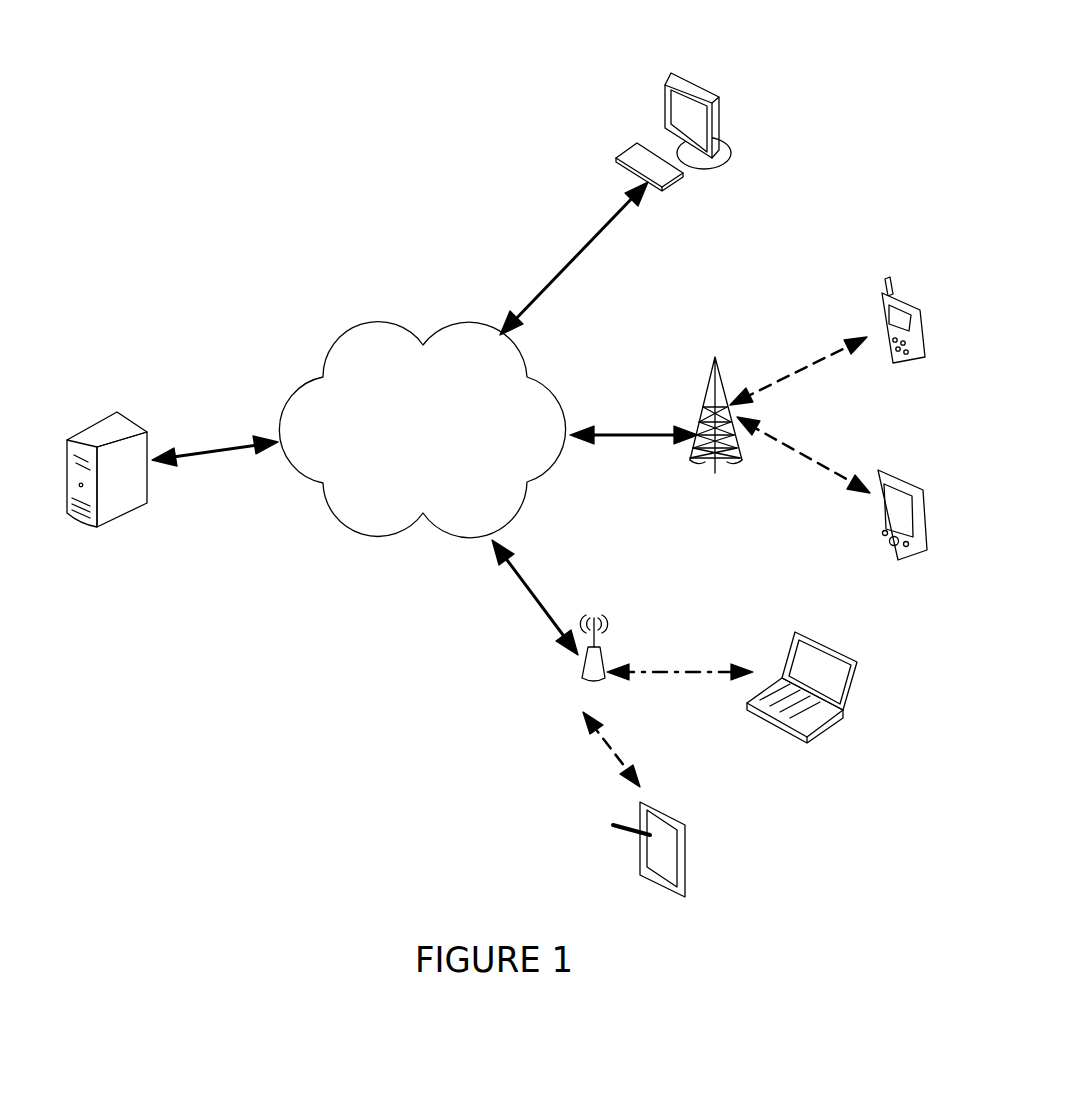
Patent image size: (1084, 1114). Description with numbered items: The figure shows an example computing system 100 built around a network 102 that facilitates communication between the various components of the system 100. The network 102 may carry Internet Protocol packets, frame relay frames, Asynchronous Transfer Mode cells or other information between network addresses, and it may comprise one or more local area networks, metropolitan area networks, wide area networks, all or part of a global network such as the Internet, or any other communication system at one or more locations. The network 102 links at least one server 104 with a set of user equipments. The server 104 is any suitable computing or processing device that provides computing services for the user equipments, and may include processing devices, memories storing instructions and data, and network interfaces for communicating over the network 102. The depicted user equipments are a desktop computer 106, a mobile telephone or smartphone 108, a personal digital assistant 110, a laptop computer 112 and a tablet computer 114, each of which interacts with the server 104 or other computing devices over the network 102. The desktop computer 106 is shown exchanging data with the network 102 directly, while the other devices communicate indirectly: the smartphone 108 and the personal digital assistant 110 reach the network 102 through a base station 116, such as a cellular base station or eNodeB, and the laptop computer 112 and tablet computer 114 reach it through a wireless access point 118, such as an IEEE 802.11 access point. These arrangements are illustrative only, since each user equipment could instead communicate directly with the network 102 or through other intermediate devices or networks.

The computing system 100 is at (242, 180).
The network 102 is at (335, 343).
The server 104 is at (83, 432).
The desktop computer 106 is at (665, 82).
The mobile telephone or smartphone 108 is at (918, 300).
The personal digital assistant 110 is at (915, 483).
The laptop computer 112 is at (860, 677).
The tablet computer 114 is at (685, 845).
The base station 116 is at (742, 457).
The wireless access point 118 is at (607, 658).